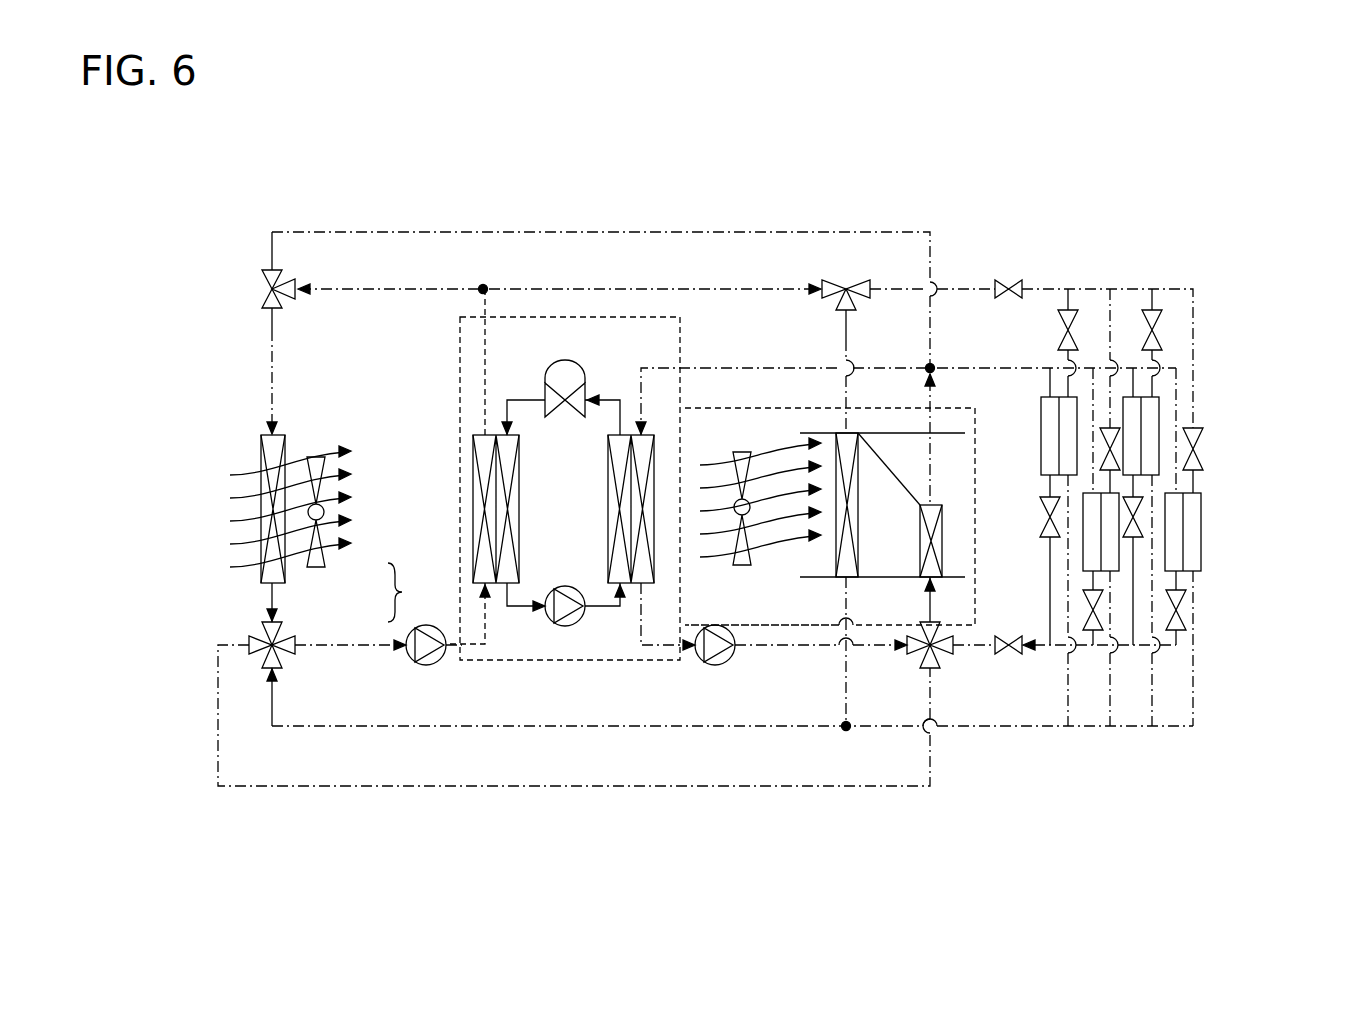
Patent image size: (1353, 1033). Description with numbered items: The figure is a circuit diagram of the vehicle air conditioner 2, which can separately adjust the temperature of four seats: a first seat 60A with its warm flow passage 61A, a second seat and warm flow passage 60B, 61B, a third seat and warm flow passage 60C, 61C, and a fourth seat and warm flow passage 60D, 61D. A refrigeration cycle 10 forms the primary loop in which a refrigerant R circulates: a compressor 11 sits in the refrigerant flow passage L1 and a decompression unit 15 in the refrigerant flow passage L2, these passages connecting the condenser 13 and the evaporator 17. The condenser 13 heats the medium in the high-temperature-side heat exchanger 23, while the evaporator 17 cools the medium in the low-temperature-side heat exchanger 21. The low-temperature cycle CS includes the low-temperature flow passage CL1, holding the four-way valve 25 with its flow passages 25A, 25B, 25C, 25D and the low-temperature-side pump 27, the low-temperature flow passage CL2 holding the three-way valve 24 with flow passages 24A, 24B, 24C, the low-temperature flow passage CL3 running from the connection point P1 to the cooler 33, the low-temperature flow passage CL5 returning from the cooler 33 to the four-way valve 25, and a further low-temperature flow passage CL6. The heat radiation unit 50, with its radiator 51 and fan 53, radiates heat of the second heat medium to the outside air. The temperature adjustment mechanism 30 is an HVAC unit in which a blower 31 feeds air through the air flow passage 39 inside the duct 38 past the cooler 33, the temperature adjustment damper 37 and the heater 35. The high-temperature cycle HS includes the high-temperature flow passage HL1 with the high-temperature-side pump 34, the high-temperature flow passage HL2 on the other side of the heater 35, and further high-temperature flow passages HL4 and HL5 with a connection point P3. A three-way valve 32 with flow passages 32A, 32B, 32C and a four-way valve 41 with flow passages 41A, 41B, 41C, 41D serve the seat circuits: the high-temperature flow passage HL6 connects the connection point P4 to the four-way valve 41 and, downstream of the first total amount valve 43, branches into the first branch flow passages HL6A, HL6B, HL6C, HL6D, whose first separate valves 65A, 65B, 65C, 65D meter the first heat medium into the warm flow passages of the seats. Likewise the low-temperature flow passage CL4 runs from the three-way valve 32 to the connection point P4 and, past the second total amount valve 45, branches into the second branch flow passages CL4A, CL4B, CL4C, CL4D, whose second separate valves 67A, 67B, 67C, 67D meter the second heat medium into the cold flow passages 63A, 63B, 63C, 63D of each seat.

The vehicle air conditioner 2 is at (845, 168).
The refrigeration cycle 10 is at (575, 305).
The compressor 11 is at (565, 628).
The condenser 13 is at (608, 495).
The decompression unit 15 is at (560, 372).
The evaporator 17 is at (519, 485).
The low-temperature-side heat exchanger 21 is at (473, 490).
The high-temperature-side heat exchanger 23 is at (654, 455).
The three-way valve 24 is at (282, 300).
The flow passage 24A is at (268, 302).
The flow passage 24B is at (295, 280).
The flow passage 24C is at (268, 278).
The four-way valve 25 is at (262, 660).
The flow passage 25A is at (278, 658).
The flow passage 25B is at (280, 636).
The flow passage 25C is at (266, 632).
The flow passage 25D is at (255, 641).
The low-temperature-side pump 27 is at (426, 666).
The temperature adjustment mechanism 30 is at (777, 393).
The blower 31 is at (742, 452).
The three-way valve 32 is at (848, 289).
The valve port 32A is at (833, 285).
The valve port 32B is at (858, 283).
The valve port 32C is at (840, 300).
The cooler 33 is at (842, 433).
The high-temperature-side pump 34 is at (715, 666).
The heater 35 is at (945, 535).
The temperature adjustment damper 37 is at (900, 478).
The duct 38 is at (955, 433).
The air flow passage 39 is at (883, 546).
The four-way valve 41 is at (950, 652).
The valve port 41A is at (953, 640).
The valve port 41B is at (920, 634).
The valve port 41C is at (920, 652).
The valve port 41D is at (935, 665).
The first total amount valve 43 is at (1018, 655).
The second total amount valve 45 is at (1005, 282).
The heat radiation unit 50 is at (324, 528).
The radiator 51 is at (290, 583).
The fan 53 is at (328, 567).
The seat 60A is at (1041, 440).
The warm flow passage 61A is at (1060, 450).
The seat heat exchangers 60C, 61C is at (1160, 405).
The seat heat exchangers 60B, 61B is at (1120, 560).
The seat heat exchangers 60D, 61D is at (1185, 494).
The cold flow passage 63A is at (1045, 490).
The cold flow passage 63B is at (1103, 612).
The cold flow passage 63C is at (1145, 510).
The cold flow passage 63D is at (1140, 525).
The first separate valve 65A is at (1045, 522).
The first separate valve 65B is at (1095, 650).
The first separate valve 65C is at (1145, 540).
The first separate valve 65D is at (1186, 612).
The second separate valve 67A is at (1062, 300).
The second separate valve 67B is at (1120, 450).
The second separate valve 67C is at (1162, 330).
The second separate valve 67D is at (1200, 450).
The low-temperature flow passage CL1 is at (355, 646).
The low-temperature flow passage CL2 is at (358, 289).
The low-temperature flow passage CL3 is at (487, 305).
The low-temperature flow passage CL4 is at (1080, 289).
The second branch flow passage CL4A is at (1062, 295).
The second branch flow passage CL4B is at (1112, 300).
The second branch flow passage CL4C is at (1156, 300).
The second branch flow passage CL4D is at (1196, 330).
The low-temperature flow passage CL5 is at (570, 786).
The cooling line 6 CL6 is at (940, 282).
The low-temperature cycle CS is at (433, 275).
The high-temperature flow passage HL1 is at (805, 728).
The high-temperature flow passage HL2 is at (936, 366).
The heating line 4 HL4 is at (900, 232).
The heating line 5 HL5 is at (648, 788).
The high-temperature flow passage HL6 is at (1052, 368).
The first branch flow passage HL6A is at (1068, 600).
The first branch flow passage HL6B is at (1108, 300).
The first branch flow passage HL6C is at (1193, 660).
The first branch flow passage HL6D is at (1180, 372).
The high-temperature cycle HS is at (750, 350).
The refrigerant flow passage L1 is at (655, 646).
The refrigerant flow passage L2 is at (612, 400).
The refrigerant R is at (507, 400).
The connection point P1 is at (483, 285).
The branch point P3 is at (850, 730).
The connection point P4 is at (926, 372).